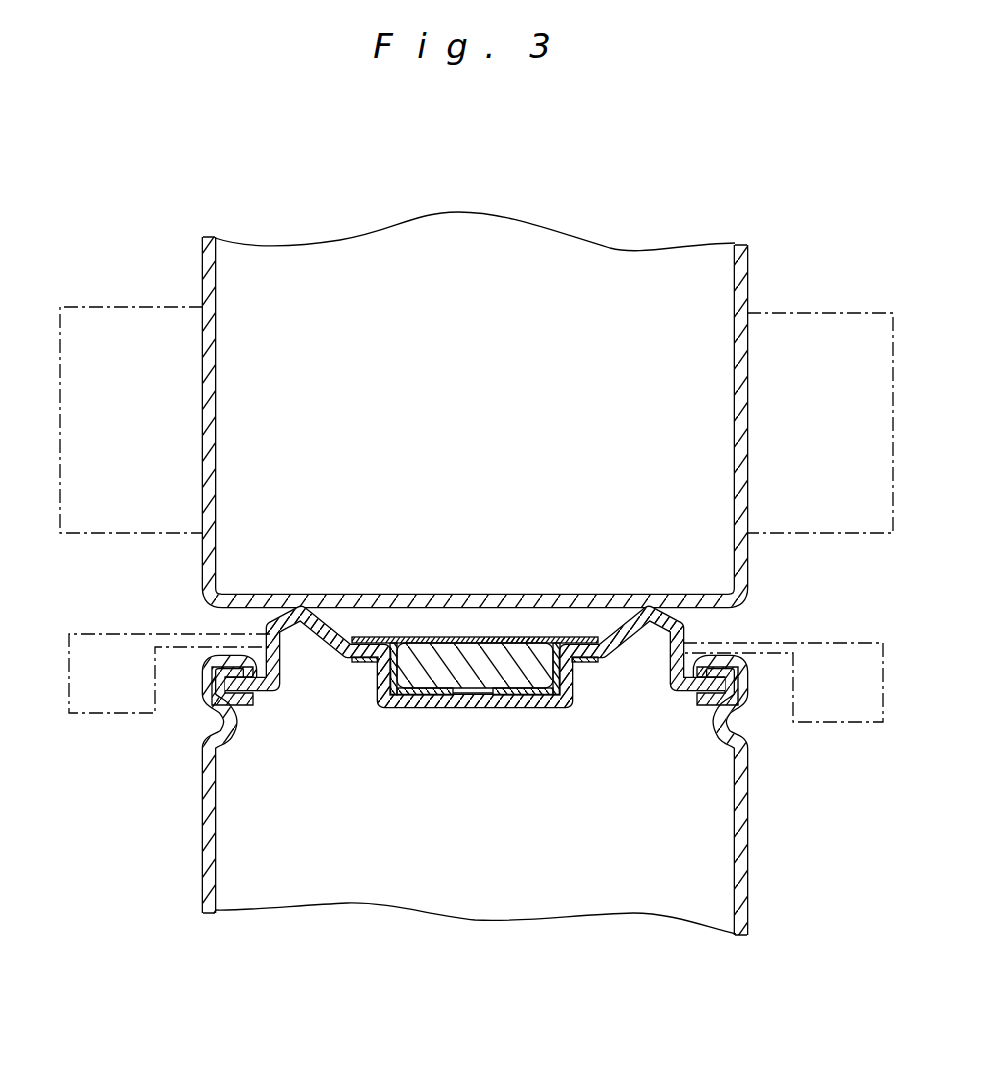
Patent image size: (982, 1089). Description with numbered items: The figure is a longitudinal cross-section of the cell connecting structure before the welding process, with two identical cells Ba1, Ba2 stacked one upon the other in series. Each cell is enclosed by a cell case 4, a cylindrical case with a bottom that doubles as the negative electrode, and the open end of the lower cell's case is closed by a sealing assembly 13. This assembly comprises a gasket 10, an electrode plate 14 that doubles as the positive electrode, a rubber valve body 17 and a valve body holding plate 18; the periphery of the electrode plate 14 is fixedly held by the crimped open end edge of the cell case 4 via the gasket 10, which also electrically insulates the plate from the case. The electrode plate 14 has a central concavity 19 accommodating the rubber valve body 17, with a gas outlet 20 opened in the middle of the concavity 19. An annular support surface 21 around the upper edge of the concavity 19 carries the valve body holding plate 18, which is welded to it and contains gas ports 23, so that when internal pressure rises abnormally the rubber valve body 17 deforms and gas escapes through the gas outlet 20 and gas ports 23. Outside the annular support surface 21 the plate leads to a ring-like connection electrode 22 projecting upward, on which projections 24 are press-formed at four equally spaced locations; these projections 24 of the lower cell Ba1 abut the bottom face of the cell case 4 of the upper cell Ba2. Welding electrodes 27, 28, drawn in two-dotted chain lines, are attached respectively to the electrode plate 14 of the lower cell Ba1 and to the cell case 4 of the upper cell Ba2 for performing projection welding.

The cell case 4 is at (461, 573).
The lower cell Ba1 is at (745, 855).
The upper cell Ba2 is at (200, 279).
The gasket 10 is at (243, 706).
The sealing assembly 13 is at (473, 663).
The electrode plate 14 is at (560, 706).
The rubber valve body 17 is at (428, 706).
The valve body holding plate 18 is at (508, 638).
The concavity 19 is at (516, 703).
The gas outlet 20 is at (470, 702).
The annular support surface 21 is at (374, 636).
The connection electrode 22 is at (475, 622).
The gas ports 23 is at (404, 638).
The projections 24 is at (303, 607).
The welding electrode 27 is at (178, 633).
The welding electrode 28 is at (72, 307).